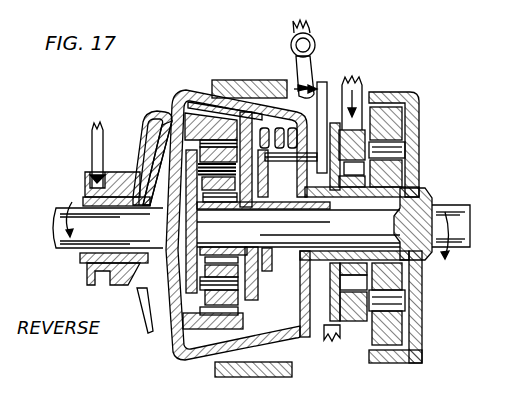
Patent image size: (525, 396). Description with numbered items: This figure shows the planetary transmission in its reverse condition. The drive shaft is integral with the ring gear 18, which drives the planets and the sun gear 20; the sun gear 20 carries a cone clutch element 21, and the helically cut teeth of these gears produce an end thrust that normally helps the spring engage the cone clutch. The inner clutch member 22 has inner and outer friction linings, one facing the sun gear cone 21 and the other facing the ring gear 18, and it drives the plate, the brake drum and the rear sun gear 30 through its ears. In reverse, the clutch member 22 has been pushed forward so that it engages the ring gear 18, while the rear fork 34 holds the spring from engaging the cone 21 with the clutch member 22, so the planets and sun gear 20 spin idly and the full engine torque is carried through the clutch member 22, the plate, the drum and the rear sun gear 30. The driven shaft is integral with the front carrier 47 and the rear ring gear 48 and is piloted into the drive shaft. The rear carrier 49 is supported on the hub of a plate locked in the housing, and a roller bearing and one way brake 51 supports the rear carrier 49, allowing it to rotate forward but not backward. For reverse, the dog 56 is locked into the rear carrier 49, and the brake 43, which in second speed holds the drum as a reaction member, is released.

The ring gear 18 is at (207, 329).
The sun gear 20 is at (250, 206).
The cone clutch element 21 is at (200, 93).
The inner clutch member 22 is at (158, 113).
The rear sun gear 30 is at (353, 198).
The fork 34 is at (318, 56).
The brake 43 is at (273, 80).
The front carrier 47 is at (180, 298).
The rear ring gear 48 is at (410, 92).
The rear carrier 49 is at (404, 152).
The roller bearing and one way brake 51 is at (345, 232).
The dog 56 is at (366, 88).